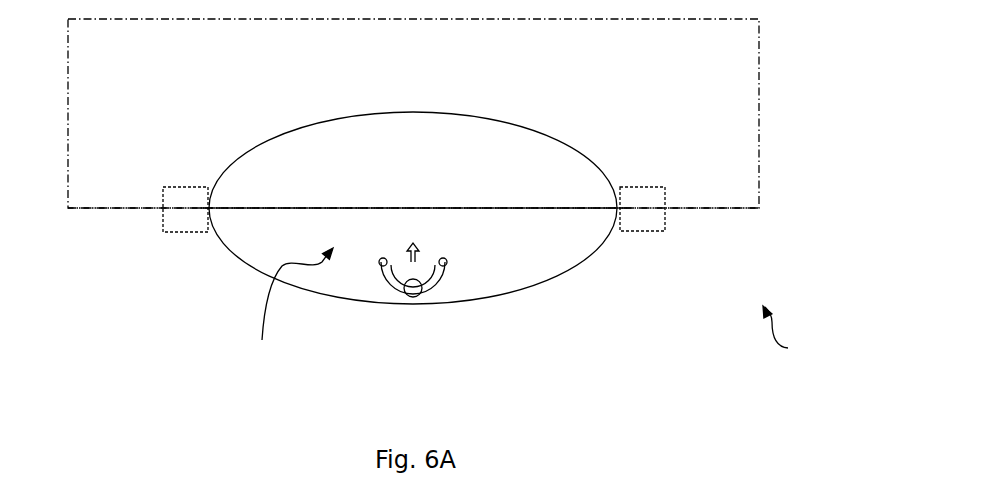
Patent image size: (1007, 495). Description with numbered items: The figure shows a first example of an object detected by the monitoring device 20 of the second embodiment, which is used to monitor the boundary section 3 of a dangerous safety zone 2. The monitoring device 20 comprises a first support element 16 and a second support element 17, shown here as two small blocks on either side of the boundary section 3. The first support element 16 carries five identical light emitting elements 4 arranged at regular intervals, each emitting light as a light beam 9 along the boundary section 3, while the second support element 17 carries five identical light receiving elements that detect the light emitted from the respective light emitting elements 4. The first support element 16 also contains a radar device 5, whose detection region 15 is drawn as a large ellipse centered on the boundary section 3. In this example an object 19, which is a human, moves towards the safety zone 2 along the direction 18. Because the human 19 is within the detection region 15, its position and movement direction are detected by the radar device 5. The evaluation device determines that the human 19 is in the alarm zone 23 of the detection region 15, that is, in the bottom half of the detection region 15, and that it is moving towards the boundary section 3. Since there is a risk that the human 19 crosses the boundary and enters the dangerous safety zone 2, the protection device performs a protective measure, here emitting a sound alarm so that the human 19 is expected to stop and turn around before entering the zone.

The safety zone 2 is at (760, 41).
The boundary section 3 is at (487, 205).
The light emitting element 4 is at (180, 214).
The radar device 5 is at (180, 214).
The light beam 9 is at (577, 208).
The detection region 15 is at (530, 290).
The first support element 16 is at (184, 200).
The second support element 17 is at (645, 222).
The direction 18 is at (413, 243).
The object 19 is at (446, 286).
The monitoring device 20 is at (792, 334).
The alarm zone 23 is at (289, 313).